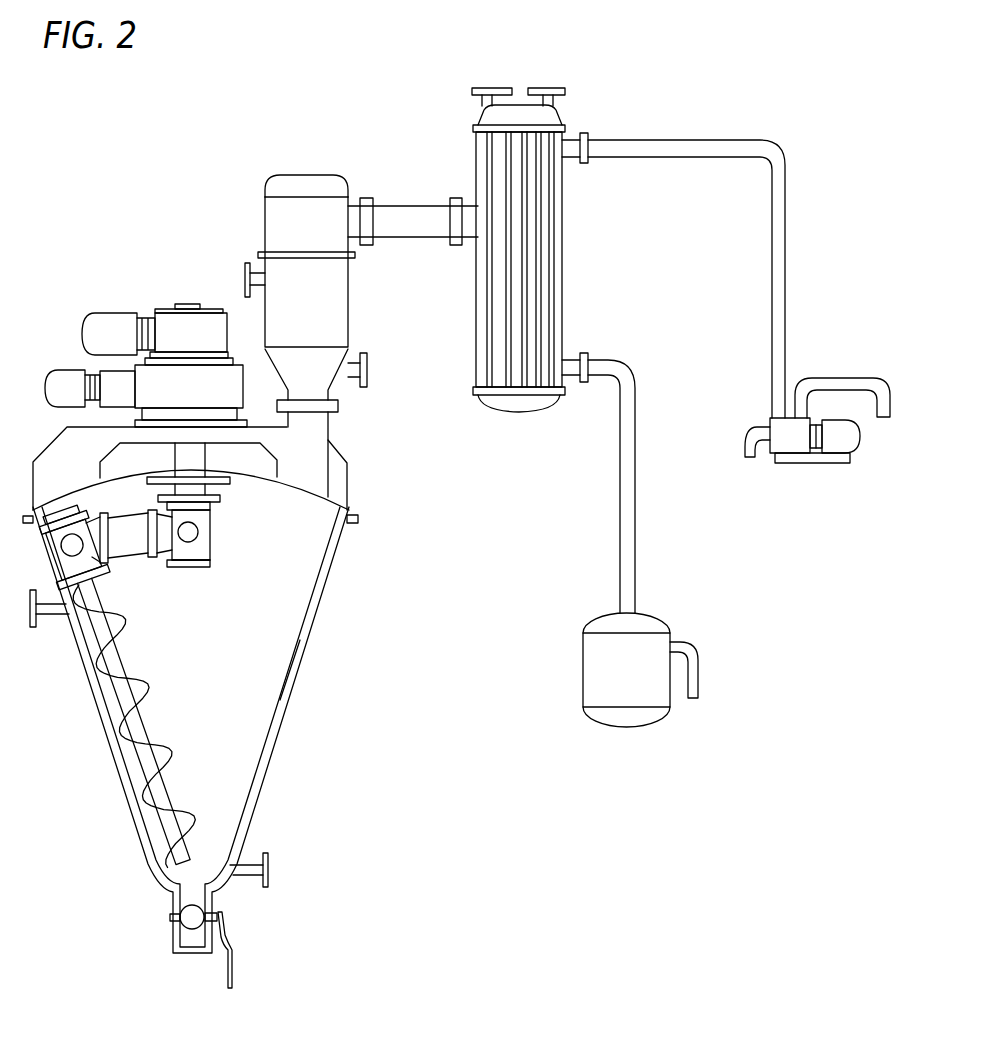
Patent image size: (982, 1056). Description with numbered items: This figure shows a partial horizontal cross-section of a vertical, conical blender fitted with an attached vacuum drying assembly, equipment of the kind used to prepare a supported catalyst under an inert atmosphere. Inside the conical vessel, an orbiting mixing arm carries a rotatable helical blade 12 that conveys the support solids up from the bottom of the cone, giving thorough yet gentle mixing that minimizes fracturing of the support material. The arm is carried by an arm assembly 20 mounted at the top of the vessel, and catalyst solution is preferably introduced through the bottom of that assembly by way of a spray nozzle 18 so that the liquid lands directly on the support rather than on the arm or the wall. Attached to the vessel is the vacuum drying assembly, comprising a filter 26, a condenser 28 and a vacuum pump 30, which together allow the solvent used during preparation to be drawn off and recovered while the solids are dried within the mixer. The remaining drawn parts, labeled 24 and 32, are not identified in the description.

The rotatable helical blade 12 is at (104, 699).
The spray nozzle 18 is at (128, 705).
The arm assembly 20 is at (205, 677).
The valve 24 is at (195, 568).
The filter 26 is at (277, 737).
The condenser 28 is at (331, 313).
The vacuum pump 30 is at (565, 242).
The vacuum pump 32 is at (838, 443).